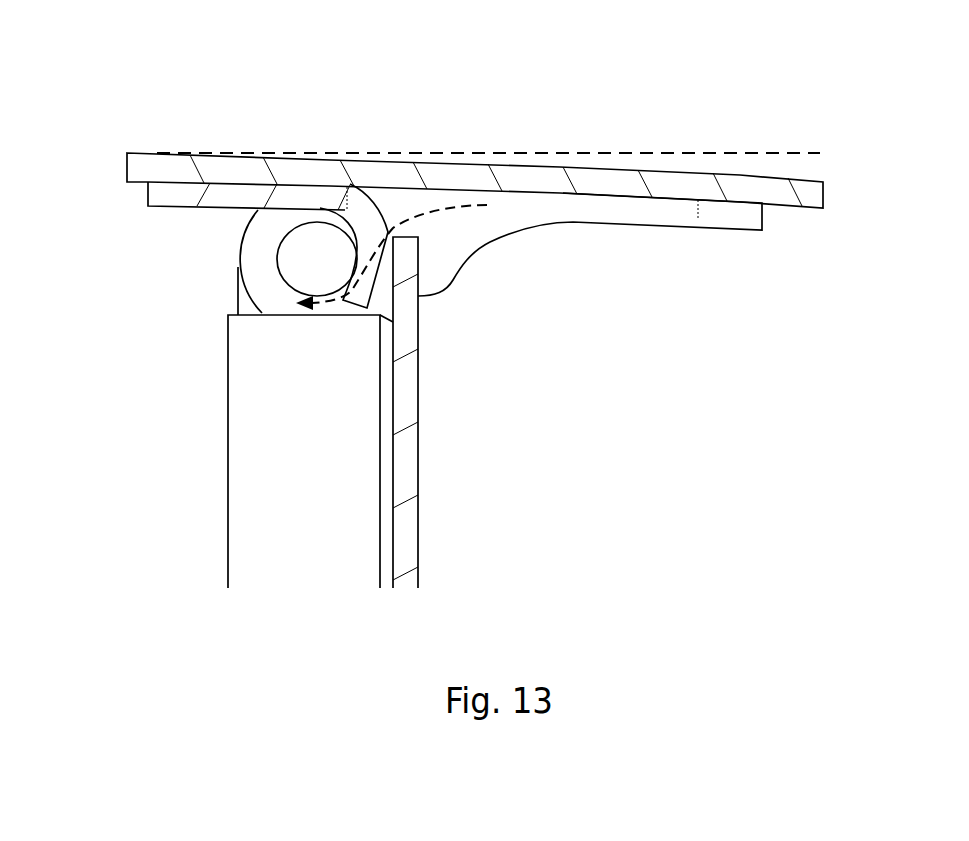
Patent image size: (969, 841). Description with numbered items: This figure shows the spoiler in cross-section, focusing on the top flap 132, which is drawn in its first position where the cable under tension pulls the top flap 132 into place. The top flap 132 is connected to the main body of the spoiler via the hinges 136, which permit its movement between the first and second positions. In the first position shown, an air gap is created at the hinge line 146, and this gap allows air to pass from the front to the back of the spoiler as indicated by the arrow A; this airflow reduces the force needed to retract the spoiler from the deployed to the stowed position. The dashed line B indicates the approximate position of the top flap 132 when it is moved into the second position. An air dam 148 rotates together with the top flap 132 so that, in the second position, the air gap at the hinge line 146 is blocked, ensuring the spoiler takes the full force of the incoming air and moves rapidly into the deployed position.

The top flap 132 is at (745, 188).
The hinges 136 is at (258, 273).
The hinge line 146 is at (388, 233).
The air dam 148 is at (233, 205).
The arrow A is at (452, 208).
The dashed line B is at (507, 154).